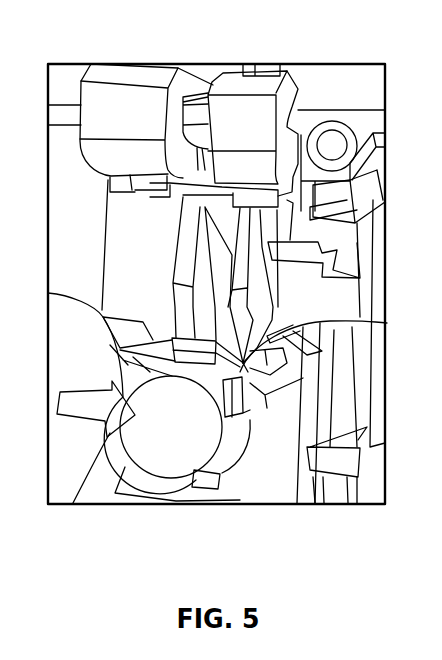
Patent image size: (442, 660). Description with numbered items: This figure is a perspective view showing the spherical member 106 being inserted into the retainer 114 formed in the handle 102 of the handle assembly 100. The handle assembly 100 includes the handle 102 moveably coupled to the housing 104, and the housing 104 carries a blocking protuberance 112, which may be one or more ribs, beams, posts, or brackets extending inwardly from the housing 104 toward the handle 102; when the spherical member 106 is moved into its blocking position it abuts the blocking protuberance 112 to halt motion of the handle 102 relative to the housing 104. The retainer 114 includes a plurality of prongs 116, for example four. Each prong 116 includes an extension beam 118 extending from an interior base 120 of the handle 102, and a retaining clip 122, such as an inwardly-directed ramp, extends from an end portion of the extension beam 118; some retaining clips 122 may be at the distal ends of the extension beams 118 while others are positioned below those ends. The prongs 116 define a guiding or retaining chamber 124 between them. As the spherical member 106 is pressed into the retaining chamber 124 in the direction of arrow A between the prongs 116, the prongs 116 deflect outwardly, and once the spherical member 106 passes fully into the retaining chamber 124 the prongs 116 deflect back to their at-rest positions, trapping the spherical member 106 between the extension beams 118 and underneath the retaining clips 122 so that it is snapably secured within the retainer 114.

The handle assembly 100 is at (96, 45).
The handle 102 is at (258, 500).
The housing 104 is at (333, 121).
The spherical member 106 is at (145, 437).
The blocking protuberance 112 is at (240, 270).
The retainer 114 is at (340, 322).
The prong 116 is at (267, 408).
The extension beam 118 is at (248, 378).
The interior base 120 is at (237, 487).
The retaining clip 122 is at (181, 345).
The retaining chamber 124 is at (224, 452).
The arrow A is at (87, 410).